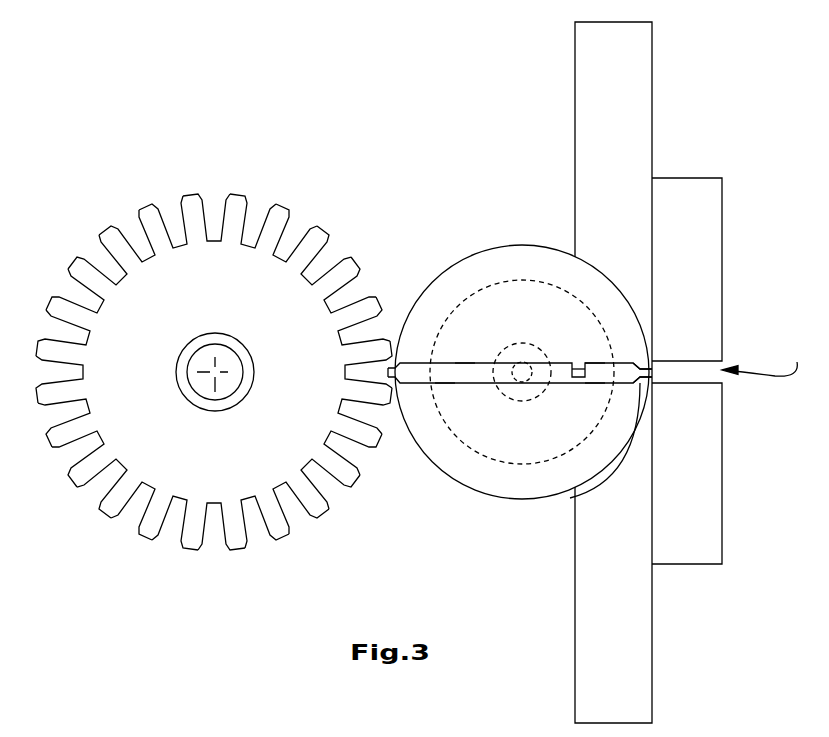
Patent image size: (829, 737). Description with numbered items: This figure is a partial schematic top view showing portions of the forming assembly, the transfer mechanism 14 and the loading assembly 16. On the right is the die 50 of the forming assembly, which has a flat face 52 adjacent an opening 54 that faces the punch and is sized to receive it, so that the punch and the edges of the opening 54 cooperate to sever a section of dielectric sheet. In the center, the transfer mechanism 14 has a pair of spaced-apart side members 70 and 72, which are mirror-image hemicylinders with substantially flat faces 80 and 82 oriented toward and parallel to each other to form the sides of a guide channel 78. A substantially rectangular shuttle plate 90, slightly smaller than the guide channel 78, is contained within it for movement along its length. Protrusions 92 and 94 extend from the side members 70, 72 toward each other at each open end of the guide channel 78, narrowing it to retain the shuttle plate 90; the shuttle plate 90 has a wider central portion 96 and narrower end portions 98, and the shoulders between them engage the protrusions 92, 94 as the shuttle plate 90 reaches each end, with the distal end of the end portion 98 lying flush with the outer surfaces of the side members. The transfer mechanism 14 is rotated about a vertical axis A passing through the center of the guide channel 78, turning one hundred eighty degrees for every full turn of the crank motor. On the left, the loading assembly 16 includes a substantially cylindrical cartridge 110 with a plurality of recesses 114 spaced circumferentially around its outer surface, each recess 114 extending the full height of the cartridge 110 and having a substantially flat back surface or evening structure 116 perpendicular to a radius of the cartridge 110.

The transfer mechanism 14 is at (581, 311).
The loading assembly 16 is at (214, 328).
The die 50 is at (705, 165).
The flat face 52 is at (722, 350).
The opening 54 is at (766, 357).
The side member 70 is at (500, 262).
The side member 72 is at (508, 485).
The guide channel 78 is at (581, 371).
The flat face 80 is at (593, 362).
The flat face 82 is at (593, 382).
The shuttle plate 90 is at (445, 372).
The protrusion 92 is at (645, 363).
The protrusion 94 is at (646, 383).
The central portion 96 is at (465, 372).
The end portion 98 is at (413, 362).
The cartridge 110 is at (226, 487).
The recess 114 is at (122, 210).
The evening structure 116 is at (260, 212).
The axis A is at (216, 370).